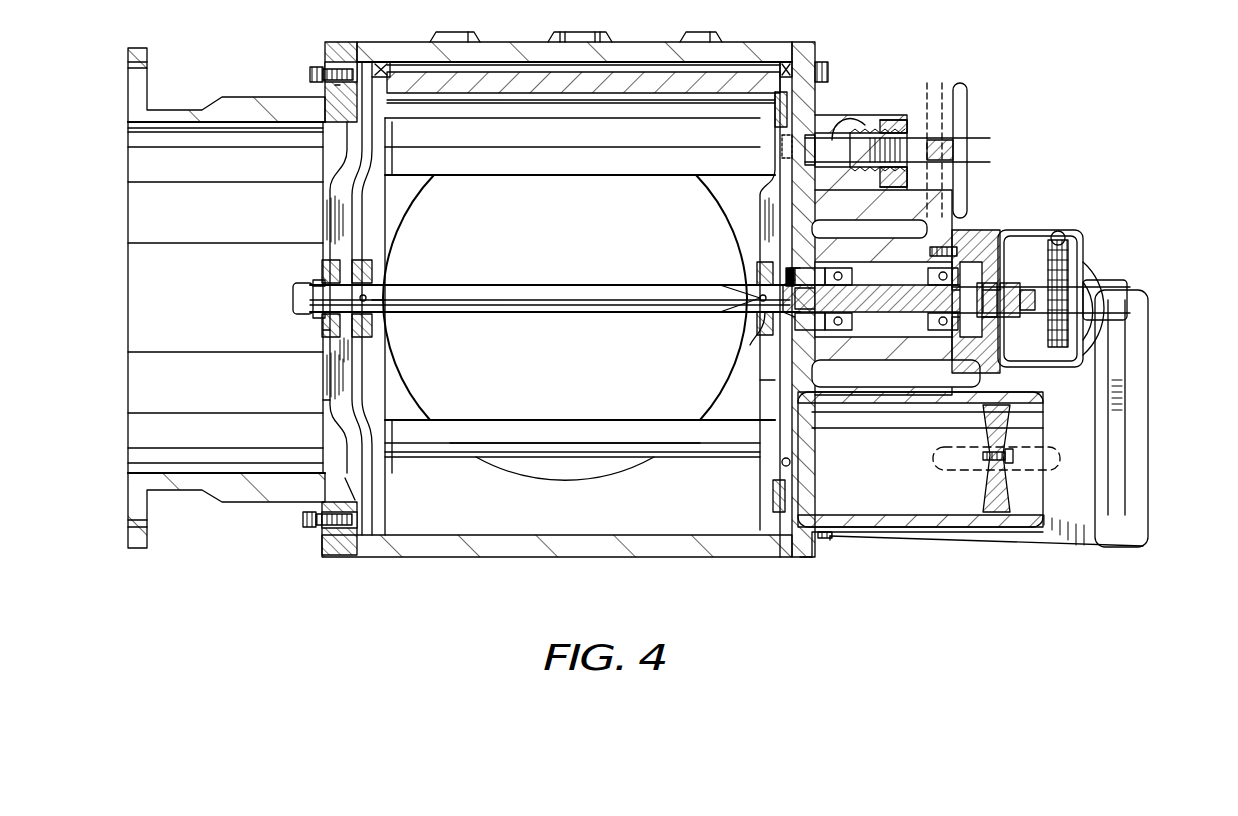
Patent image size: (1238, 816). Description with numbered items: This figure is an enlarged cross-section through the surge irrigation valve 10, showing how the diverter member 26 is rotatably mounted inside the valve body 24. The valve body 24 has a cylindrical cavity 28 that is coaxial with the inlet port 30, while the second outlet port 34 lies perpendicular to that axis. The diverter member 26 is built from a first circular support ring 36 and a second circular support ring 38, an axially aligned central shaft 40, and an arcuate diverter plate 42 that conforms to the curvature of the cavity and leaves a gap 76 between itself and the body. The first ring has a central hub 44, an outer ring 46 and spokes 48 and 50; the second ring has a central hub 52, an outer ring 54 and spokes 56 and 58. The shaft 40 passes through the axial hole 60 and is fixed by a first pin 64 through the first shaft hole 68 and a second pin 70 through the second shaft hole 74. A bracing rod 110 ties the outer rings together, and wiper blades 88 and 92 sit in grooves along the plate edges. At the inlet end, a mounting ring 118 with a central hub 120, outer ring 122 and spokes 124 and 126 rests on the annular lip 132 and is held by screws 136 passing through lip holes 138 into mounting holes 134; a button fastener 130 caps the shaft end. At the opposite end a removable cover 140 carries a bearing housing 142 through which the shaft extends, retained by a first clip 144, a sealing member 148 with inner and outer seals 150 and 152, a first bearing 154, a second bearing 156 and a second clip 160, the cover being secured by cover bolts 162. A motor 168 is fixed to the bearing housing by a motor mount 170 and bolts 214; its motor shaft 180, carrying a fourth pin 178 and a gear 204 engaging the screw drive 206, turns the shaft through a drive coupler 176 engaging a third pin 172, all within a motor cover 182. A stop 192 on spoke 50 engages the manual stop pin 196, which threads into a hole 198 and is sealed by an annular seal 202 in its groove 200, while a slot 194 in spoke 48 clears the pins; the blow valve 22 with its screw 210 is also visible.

The surge irrigation valve 10 is at (982, 42).
The blow valve 22 is at (922, 535).
The valve body 24 is at (388, 554).
The diverter member 26 is at (566, 87).
The cylindrical cavity 28 is at (525, 535).
The inlet port 30 is at (226, 298).
The second outlet port 34 is at (420, 182).
The first circular support ring 36 is at (772, 492).
The second circular support ring 38 is at (392, 480).
The central shaft 40 is at (568, 310).
The arcuate diverter plate 42 is at (520, 72).
The central hub 44 is at (762, 335).
The outer ring 46 is at (778, 520).
The spoke 48 is at (770, 380).
The spoke 50 is at (765, 188).
The central hub 52 is at (362, 332).
The outer ring 54 is at (368, 535).
The spoke 56 is at (362, 353).
The spoke 58 is at (383, 168).
The axial hole 60 is at (745, 308).
The first pin 64 is at (760, 290).
The first shaft hole 68 is at (755, 296).
The second pin 70 is at (385, 300).
The second shaft hole 74 is at (367, 298).
The gap 76 is at (643, 68).
The wiper blade 88 is at (390, 62).
The wiper blade 92 is at (785, 62).
The bracing rod 110 is at (568, 428).
The mounting ring 118 is at (318, 406).
The central hub 120 is at (330, 270).
The outer ring 122 is at (345, 490).
The spoke 124 is at (330, 372).
The spoke 126 is at (335, 200).
The button fastener 130 is at (296, 298).
The annular lip 132 is at (330, 62).
The mounting hole 134 is at (355, 62).
The screw 136 is at (312, 75).
The lip hole 138 is at (335, 85).
The cover 140 is at (810, 218).
The bearing housing 142 is at (828, 240).
The first clip 144 is at (798, 315).
The sealing member 148 is at (808, 330).
The inner seal 150 is at (788, 270).
The outer seal 152 is at (800, 258).
The first bearing 154 is at (838, 330).
The second bearing 156 is at (934, 270).
The second clip 160 is at (968, 230).
The cover bolt 162 is at (822, 62).
The motor 168 is at (1093, 300).
The motor mount 170 is at (975, 262).
The third pin 172 is at (920, 306).
The drive coupler 176 is at (963, 345).
The fourth pin 178 is at (1022, 312).
The motor shaft 180 is at (1000, 283).
The motor cover 182 is at (1148, 510).
The stop 192 is at (778, 135).
The slot 194 is at (782, 462).
The manual stop pin 196 is at (968, 150).
The hole 198 is at (880, 180).
The groove 200 is at (858, 138).
The annular seal 202 is at (820, 140).
The gear 204 is at (1068, 275).
The screw drive 206 is at (1080, 232).
The screw 210 is at (1015, 455).
The bolt 214 is at (940, 247).